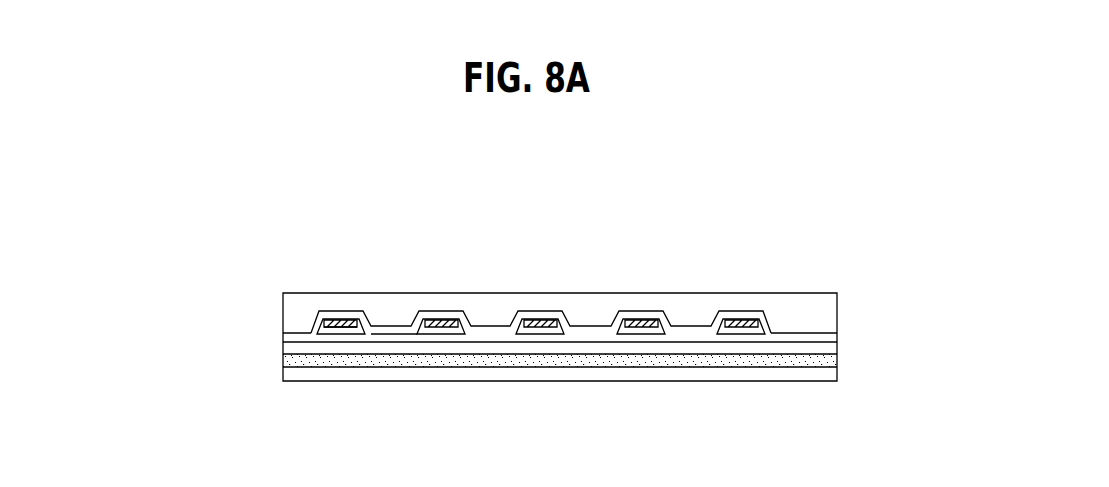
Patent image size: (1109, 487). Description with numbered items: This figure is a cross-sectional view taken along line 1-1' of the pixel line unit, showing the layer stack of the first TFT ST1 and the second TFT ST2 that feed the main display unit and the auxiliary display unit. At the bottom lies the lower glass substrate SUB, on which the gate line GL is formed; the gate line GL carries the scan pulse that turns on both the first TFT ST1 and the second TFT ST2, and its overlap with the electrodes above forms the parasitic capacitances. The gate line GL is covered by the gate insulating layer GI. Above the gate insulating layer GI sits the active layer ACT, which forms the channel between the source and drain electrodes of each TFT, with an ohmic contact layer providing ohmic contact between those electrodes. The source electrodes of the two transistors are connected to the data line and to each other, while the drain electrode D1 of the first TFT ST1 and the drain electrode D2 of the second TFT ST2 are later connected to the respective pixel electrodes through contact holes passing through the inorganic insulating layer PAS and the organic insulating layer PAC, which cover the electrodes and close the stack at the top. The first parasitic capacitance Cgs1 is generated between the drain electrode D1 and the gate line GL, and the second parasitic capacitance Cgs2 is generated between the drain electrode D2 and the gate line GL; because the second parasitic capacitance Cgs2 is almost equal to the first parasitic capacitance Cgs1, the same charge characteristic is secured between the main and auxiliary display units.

The organic insulating layer PAC is at (284, 305).
The inorganic insulating layer PAS is at (285, 335).
The gate insulating layer GI is at (285, 348).
The gate line GL is at (285, 362).
The lower glass substrate SUB is at (285, 375).
The section line end point 1 is at (284, 394).
The section line end point 1' is at (836, 394).
The active layer ACT is at (378, 338).
The first parasitic capacitance Cgs1 is at (442, 329).
The second parasitic capacitance Cgs2 is at (637, 329).
The first TFT ST1 is at (525, 218).
The second TFT ST2 is at (763, 220).
The drain electrode of the first TFT D1 is at (440, 318).
The drain electrode of the second TFT D2 is at (639, 318).